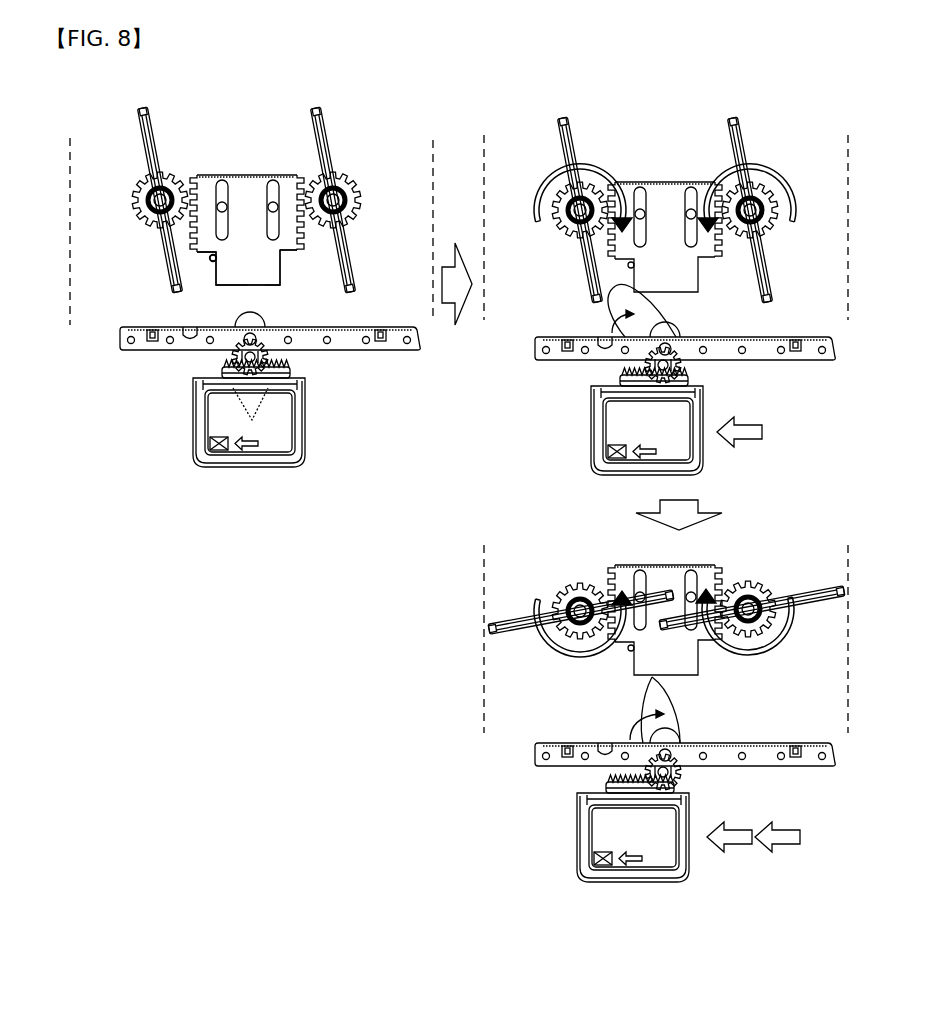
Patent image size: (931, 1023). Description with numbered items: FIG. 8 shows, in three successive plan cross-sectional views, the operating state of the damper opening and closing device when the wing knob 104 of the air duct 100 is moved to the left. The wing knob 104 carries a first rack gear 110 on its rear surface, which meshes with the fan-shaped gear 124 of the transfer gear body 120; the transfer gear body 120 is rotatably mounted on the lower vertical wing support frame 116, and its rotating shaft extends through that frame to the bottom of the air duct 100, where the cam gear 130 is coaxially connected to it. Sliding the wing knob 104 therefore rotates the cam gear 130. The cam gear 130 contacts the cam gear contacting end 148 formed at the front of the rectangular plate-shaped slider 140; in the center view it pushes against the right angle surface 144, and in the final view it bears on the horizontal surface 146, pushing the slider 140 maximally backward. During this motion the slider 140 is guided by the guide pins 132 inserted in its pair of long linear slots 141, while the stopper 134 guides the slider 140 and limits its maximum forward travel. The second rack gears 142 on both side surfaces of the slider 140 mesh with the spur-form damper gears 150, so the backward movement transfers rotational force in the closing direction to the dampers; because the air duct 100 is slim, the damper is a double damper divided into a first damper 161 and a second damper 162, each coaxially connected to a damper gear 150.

The air duct 100 is at (70, 327).
The wing knob 104 is at (295, 430).
The first rack gear 110 is at (292, 378).
The lower vertical wing support frame 116 is at (405, 343).
The transfer gear body 120 is at (252, 403).
The fan-shaped gear 124 is at (282, 360).
The cam gear 130 is at (244, 324).
The guide pin 132 is at (230, 192).
The stopper 134 is at (210, 261).
The slider 140 is at (234, 166).
The slot 141 is at (273, 236).
The second rack gear 142 is at (187, 175).
The right angle surface 144 is at (214, 286).
The horizontal surface 146 is at (284, 293).
The cam gear contacting end 148 is at (274, 278).
The damper gear 150 is at (138, 222).
The first damper 161 is at (157, 128).
The second damper 162 is at (330, 133).